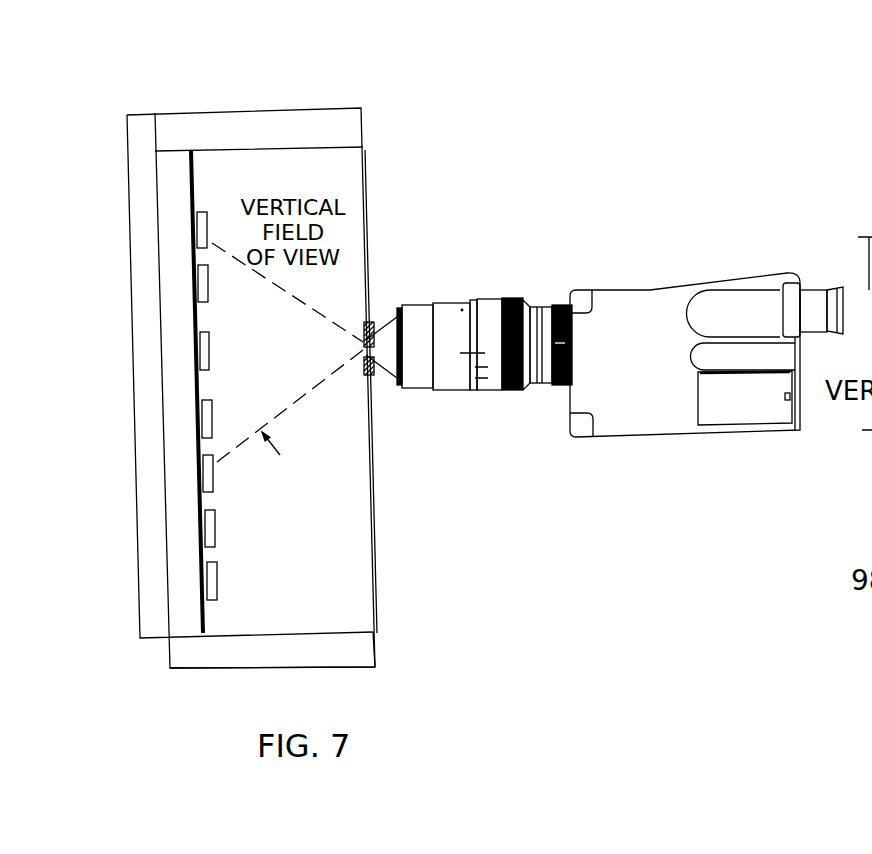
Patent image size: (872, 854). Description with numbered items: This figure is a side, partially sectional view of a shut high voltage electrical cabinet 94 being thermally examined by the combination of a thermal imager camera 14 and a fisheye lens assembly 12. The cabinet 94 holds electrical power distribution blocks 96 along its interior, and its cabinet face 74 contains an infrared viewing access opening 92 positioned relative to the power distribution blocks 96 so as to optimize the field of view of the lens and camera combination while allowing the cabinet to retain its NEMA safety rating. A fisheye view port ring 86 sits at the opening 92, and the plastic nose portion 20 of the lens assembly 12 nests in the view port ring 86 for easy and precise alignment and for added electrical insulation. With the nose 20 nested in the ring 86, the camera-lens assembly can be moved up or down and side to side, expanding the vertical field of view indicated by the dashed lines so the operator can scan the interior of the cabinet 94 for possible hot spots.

The fisheye lens assembly 12 is at (530, 298).
The thermal imager camera 14 is at (618, 427).
The nose portion 20 is at (385, 377).
The cabinet face 74 is at (375, 607).
The fisheye view port ring 86 is at (372, 318).
The access opening 92 is at (362, 352).
The cabinet 94 is at (382, 668).
The electrical power distribution blocks 96 is at (210, 512).